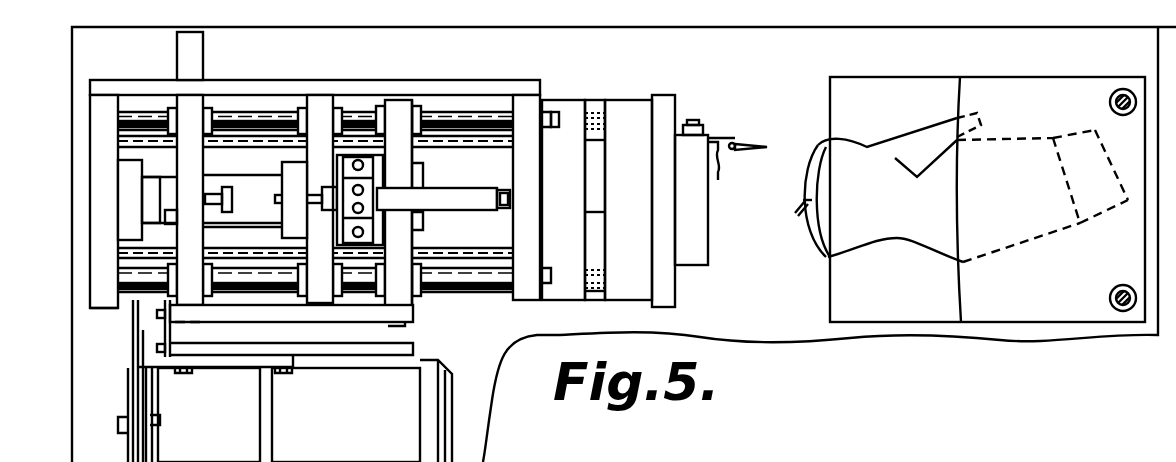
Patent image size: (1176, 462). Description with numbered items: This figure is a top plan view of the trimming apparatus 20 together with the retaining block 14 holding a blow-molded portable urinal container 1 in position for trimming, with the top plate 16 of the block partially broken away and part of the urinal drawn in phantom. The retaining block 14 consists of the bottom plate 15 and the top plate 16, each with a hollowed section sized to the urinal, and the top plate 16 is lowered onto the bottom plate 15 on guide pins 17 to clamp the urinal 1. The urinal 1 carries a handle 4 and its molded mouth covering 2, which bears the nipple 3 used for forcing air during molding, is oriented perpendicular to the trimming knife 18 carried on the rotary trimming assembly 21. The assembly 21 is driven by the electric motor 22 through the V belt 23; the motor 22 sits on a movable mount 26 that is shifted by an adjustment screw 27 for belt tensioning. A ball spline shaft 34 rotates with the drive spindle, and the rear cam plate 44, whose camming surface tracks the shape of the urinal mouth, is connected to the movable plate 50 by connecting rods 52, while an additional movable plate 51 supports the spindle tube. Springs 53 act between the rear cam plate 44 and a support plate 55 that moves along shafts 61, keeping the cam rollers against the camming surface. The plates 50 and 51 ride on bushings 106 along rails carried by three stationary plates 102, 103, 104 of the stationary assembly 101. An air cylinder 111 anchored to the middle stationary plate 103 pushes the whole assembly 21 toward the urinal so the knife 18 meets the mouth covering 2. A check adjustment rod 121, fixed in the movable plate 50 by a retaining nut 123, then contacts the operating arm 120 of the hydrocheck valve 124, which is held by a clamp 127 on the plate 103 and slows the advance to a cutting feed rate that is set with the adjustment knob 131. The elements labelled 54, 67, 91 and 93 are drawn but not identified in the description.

The blow-molded portable urinal container 1 is at (892, 147).
The molded mouth covering 2 is at (806, 237).
The nipple 3 is at (797, 211).
The handle 4 is at (936, 130).
The retaining block 14 is at (1002, 78).
The bottom plate 15 is at (900, 304).
The top plate 16 is at (1043, 304).
The guide pins 17 is at (1123, 88).
The trimming knife 18 is at (752, 146).
The trimming apparatus 20 is at (486, 60).
The rotary trimming assembly 21 is at (628, 98).
The electric motor 22 is at (346, 428).
The V belt 23 is at (133, 338).
The movable mount 26 is at (157, 314).
The adjustment screw 27 is at (157, 348).
The ball spline shaft 34 is at (600, 213).
The rear cam plate 44 is at (570, 215).
The movable plate 50 is at (405, 258).
The movable plate 51 is at (198, 298).
The connecting rods 52 is at (250, 112).
The springs 53 is at (597, 300).
The bearing 54 is at (592, 112).
The support plate 55 is at (636, 300).
The shafts 61 is at (588, 122).
The needle holder 67 is at (708, 265).
The arm 91 is at (719, 182).
The pivot 93 is at (726, 162).
The stationary assembly 101 is at (85, 311).
The stationary plate 102 is at (90, 279).
The middle stationary plate 103 is at (318, 302).
The stationary plate 104 is at (520, 303).
The bushings 106 is at (417, 112).
The air cylinder 111 is at (160, 178).
The operating arm 120 is at (283, 200).
The check adjustment rod 121 is at (232, 200).
The retaining nut 123 is at (212, 218).
The hydrocheck valve 124 is at (446, 192).
The clamp 127 is at (348, 184).
The adjustment knob 131 is at (503, 188).